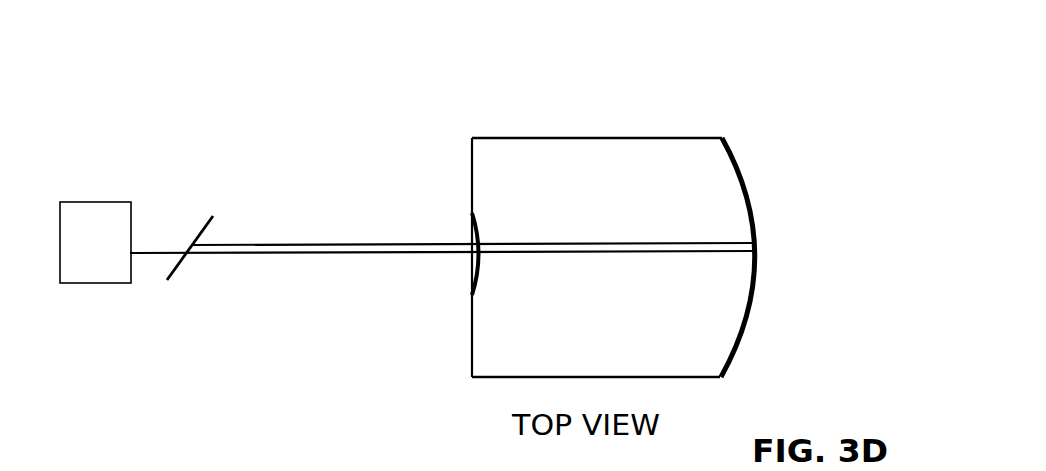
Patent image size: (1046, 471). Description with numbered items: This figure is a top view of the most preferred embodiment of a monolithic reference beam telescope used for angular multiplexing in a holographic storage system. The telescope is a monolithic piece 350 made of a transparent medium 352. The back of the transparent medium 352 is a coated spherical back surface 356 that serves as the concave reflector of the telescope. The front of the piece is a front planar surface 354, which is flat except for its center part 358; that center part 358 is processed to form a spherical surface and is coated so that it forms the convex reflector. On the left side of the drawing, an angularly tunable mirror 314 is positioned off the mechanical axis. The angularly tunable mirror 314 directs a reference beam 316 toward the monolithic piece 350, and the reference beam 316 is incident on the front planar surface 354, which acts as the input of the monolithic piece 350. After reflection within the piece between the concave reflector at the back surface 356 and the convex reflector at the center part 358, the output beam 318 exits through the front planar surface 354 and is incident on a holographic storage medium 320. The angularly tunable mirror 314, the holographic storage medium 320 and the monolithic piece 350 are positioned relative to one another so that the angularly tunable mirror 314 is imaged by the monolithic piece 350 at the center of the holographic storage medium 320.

The angularly tunable mirror 314 is at (167, 282).
The reference beam 316 is at (305, 243).
The output beam 318 is at (267, 255).
The holographic storage medium 320 is at (92, 202).
The monolithic piece 350 is at (625, 195).
The transparent medium 352 is at (577, 138).
The front planar surface 354 is at (472, 328).
The coated spherical back surface 356 is at (755, 251).
The center part 358 is at (482, 270).